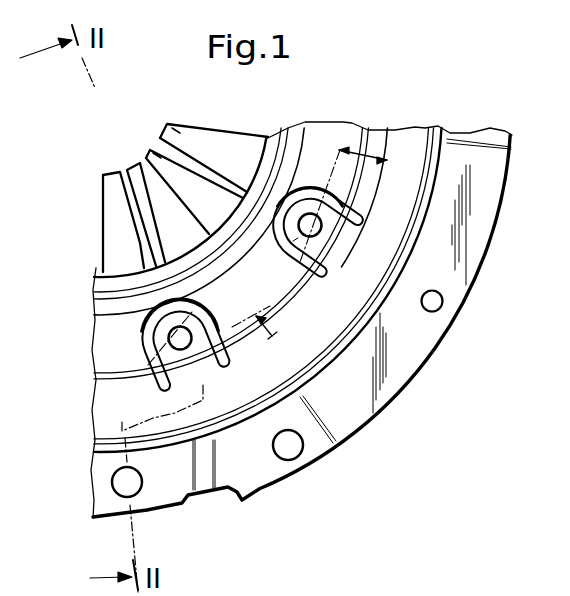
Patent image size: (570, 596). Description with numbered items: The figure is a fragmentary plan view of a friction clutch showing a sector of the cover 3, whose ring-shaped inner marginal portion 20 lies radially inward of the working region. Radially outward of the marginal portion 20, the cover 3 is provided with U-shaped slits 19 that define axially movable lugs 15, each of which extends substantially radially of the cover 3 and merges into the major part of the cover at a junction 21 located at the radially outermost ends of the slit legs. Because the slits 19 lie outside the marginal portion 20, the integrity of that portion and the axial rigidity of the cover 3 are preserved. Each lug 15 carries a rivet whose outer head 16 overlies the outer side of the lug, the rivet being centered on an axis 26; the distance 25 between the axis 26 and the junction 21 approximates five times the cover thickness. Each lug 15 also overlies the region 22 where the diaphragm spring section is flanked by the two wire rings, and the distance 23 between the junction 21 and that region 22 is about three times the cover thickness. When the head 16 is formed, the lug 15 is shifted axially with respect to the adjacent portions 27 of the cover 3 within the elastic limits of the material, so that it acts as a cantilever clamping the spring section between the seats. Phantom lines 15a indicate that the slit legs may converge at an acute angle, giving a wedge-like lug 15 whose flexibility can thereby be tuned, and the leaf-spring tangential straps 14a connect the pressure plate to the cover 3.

The cover 3 is at (490, 193).
The tangential leaf spring straps 14a is at (151, 149).
The lug 15 is at (308, 224).
The phantom lines 15a is at (179, 340).
The outer head of rivet 16 is at (311, 214).
The U-shaped slit 19 is at (289, 255).
The inner marginal portion of cover 20 is at (100, 279).
The junction 21 is at (348, 262).
The region of overlap 22 is at (287, 290).
The distance 23 is at (275, 327).
The distance 25 is at (355, 153).
The axis of rivet 26 is at (322, 232).
The adjacent portions of cover 27 is at (138, 352).